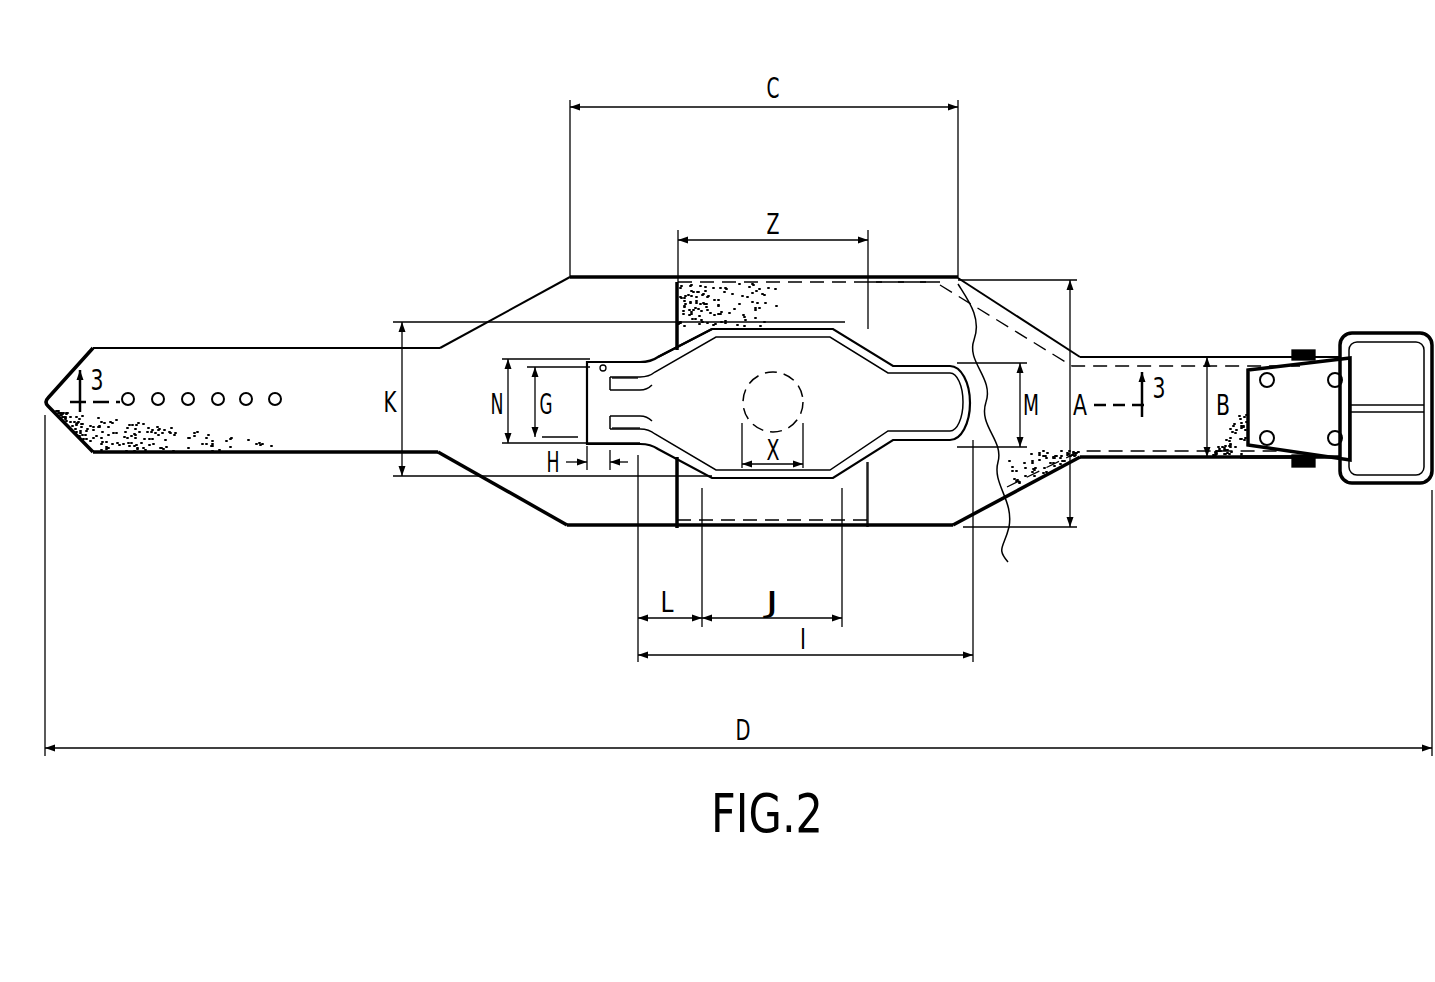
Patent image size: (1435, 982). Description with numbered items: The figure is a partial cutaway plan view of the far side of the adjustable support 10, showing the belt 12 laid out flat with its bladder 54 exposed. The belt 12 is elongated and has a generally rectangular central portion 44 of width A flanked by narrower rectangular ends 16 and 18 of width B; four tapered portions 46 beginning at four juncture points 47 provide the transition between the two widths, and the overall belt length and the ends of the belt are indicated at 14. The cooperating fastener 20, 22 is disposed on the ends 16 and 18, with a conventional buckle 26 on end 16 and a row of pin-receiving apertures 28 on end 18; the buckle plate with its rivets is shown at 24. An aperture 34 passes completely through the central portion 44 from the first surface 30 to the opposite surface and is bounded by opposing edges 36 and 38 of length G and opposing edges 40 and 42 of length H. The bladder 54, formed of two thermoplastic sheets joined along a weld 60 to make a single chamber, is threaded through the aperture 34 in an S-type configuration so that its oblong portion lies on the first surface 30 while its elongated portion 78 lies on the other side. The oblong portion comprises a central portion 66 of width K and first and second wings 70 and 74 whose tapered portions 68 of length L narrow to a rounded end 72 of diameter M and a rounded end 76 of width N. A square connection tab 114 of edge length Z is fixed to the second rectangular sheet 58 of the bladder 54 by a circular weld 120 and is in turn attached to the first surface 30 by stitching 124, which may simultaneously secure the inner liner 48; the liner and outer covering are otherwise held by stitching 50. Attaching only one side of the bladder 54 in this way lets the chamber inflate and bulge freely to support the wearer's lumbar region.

The adjustable support 10 is at (833, 188).
The belt 12 is at (258, 348).
The strap ends 14 is at (227, 487).
The end 16 is at (1256, 458).
The end 18 is at (178, 455).
The cooperating fastener 20 is at (1410, 335).
The cooperating fastener 22 is at (1300, 350).
The buckle plate 24 is at (1270, 460).
The buckle 26 is at (1377, 484).
The pin-receiving apertures 28 is at (245, 392).
The first surface 30 is at (314, 391).
The aperture 34 is at (600, 372).
The edge 36 is at (618, 378).
The edge 38 is at (587, 405).
The edge 40 is at (603, 366).
The edge 42 is at (600, 445).
The central portion 44 is at (580, 275).
The tapered portions 46 is at (470, 325).
The juncture points 47 is at (565, 275).
The inner liner 48 is at (1166, 433).
The stitching 50 is at (1125, 352).
The bladder 54 is at (905, 300).
The second rectangular sheet 58 is at (686, 397).
The weld 60 is at (792, 328).
The central portion 66 is at (723, 325).
The tapered portions 68 is at (880, 328).
The first wing 70 is at (962, 372).
The rounded end 72 is at (993, 482).
The second wing 74 is at (662, 372).
The rounded end 76 is at (640, 376).
The elongated portion 78 is at (632, 430).
The connection tab 114 is at (772, 502).
The circular weld 120 is at (805, 400).
The stitching 124 is at (812, 512).